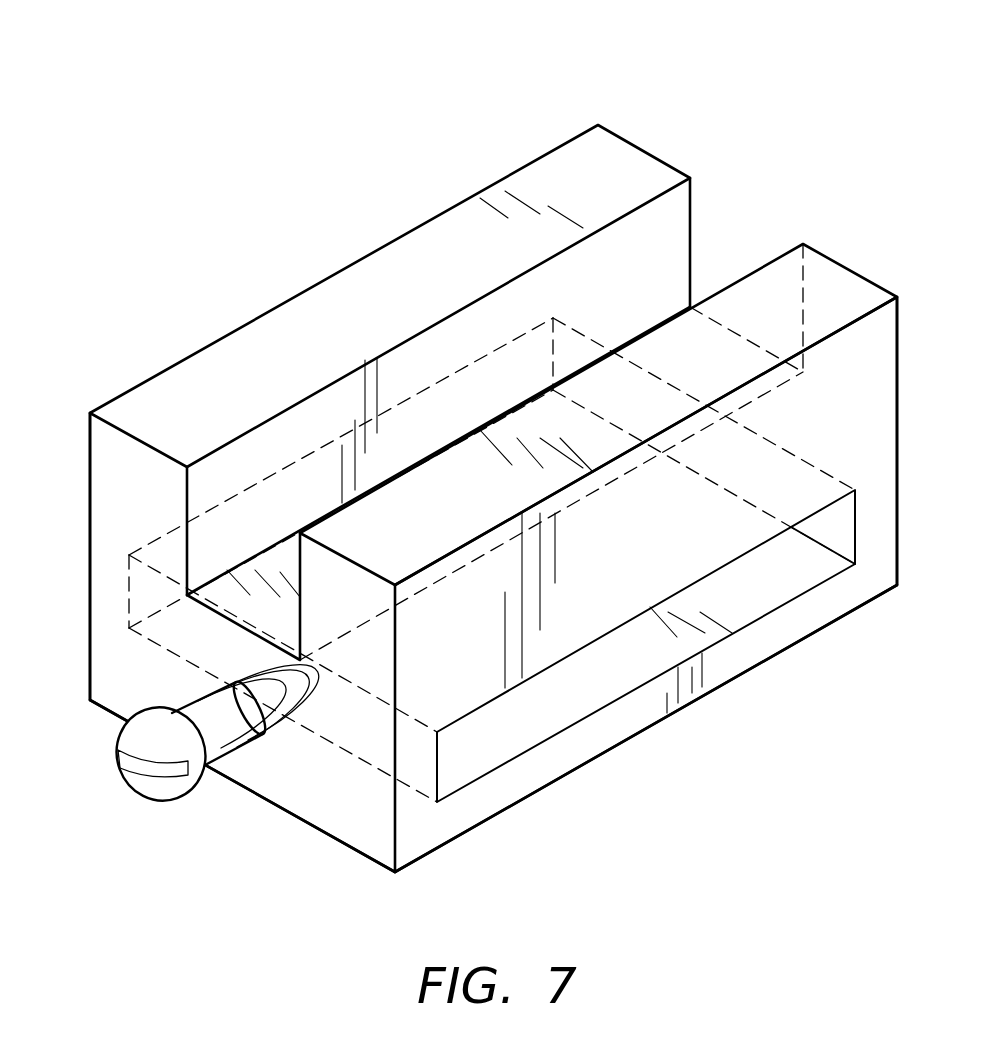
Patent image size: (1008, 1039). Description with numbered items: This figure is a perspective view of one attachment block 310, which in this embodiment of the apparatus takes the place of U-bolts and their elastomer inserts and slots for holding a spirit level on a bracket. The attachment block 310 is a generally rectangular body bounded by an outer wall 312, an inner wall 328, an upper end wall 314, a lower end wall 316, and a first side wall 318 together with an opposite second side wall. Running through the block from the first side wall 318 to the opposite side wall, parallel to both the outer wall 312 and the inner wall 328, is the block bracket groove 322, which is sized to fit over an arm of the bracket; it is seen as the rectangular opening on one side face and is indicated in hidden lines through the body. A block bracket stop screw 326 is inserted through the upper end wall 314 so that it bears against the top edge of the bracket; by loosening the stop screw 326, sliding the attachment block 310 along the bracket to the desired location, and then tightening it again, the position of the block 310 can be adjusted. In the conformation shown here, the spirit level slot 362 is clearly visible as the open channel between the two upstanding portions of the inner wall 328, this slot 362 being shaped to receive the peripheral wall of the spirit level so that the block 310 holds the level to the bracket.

The attachment block 310 is at (445, 148).
The outer wall 312 is at (480, 825).
The upper end wall 314 is at (372, 804).
The lower end wall 316 is at (900, 550).
The first side wall 318 is at (90, 478).
The block bracket groove 322 is at (537, 718).
The block bracket stop screw 326 is at (172, 792).
The inner wall 328 is at (447, 289).
The spirit level slot 362 is at (300, 417).